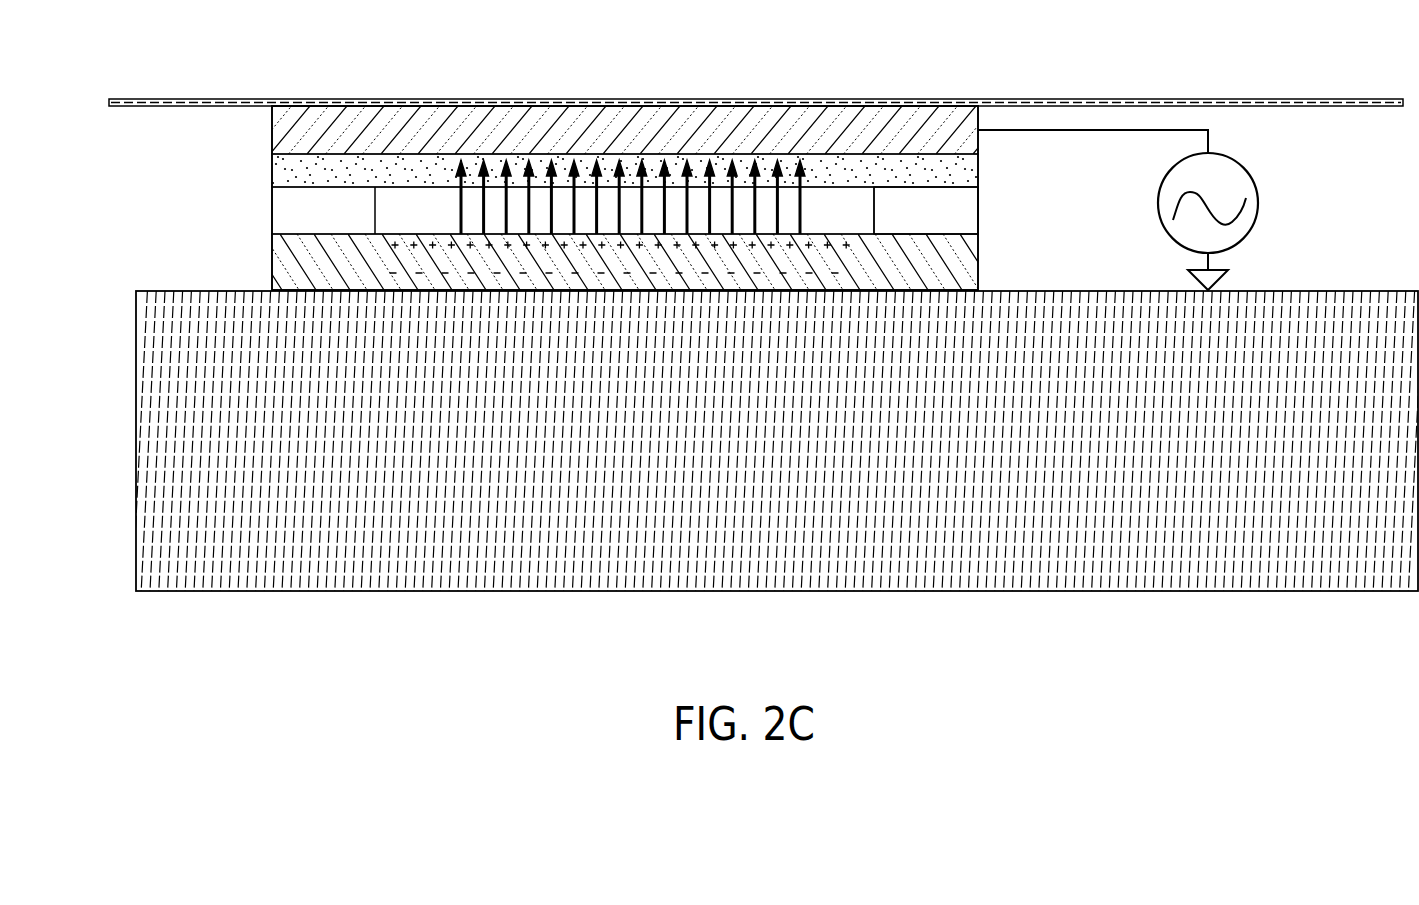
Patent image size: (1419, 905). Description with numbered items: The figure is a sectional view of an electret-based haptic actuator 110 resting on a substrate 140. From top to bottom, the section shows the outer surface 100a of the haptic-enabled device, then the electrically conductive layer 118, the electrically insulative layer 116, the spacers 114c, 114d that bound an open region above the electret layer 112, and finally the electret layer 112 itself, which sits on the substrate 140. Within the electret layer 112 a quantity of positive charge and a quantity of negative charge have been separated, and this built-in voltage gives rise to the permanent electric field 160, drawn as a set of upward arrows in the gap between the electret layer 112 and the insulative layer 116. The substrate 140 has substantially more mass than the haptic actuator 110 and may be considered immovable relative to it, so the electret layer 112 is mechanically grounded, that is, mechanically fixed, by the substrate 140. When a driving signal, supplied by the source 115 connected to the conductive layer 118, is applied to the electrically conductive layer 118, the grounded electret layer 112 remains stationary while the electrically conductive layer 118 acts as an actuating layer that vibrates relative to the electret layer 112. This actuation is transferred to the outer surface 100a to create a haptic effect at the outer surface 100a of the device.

The outer surface 100a is at (1021, 100).
The haptic actuator 110 is at (150, 250).
The electrically conductive layer 118 is at (272, 136).
The electrically insulative layer 116 is at (272, 172).
The spacer 114c is at (272, 214).
The spacer 114d is at (973, 208).
The electret layer 112 is at (272, 274).
The permanent electric field 160 is at (826, 195).
The AC voltage source 115 is at (1253, 178).
The substrate 140 is at (140, 405).